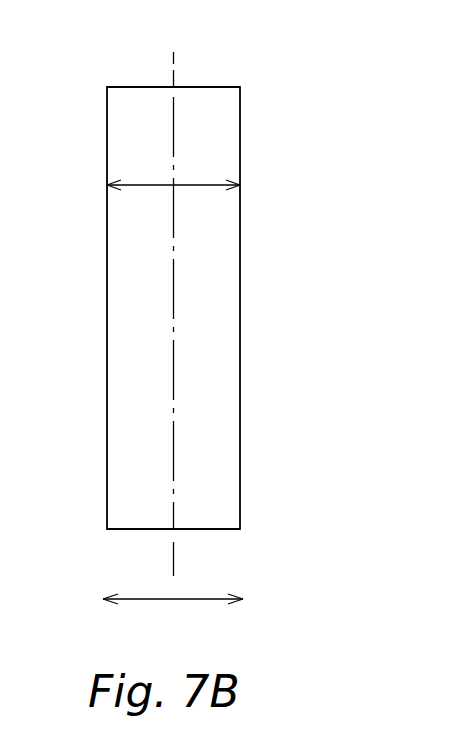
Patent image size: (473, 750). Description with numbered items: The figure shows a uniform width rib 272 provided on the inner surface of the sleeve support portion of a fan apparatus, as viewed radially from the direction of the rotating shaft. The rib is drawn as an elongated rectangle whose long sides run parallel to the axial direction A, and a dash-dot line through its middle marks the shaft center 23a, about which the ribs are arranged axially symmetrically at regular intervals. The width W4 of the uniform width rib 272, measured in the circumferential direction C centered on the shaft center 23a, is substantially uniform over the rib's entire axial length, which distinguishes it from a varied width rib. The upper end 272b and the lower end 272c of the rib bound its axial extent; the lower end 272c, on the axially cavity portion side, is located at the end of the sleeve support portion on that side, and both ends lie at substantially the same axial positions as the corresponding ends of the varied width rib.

The uniform width rib 272 is at (78, 58).
The end of uniform width rib 272b is at (139, 86).
The end of uniform width rib on axially cavity portion side 272c is at (128, 530).
The shaft center 23a is at (176, 65).
The width W4 is at (140, 183).
The axial direction A is at (175, 560).
The circumferential direction C is at (173, 616).